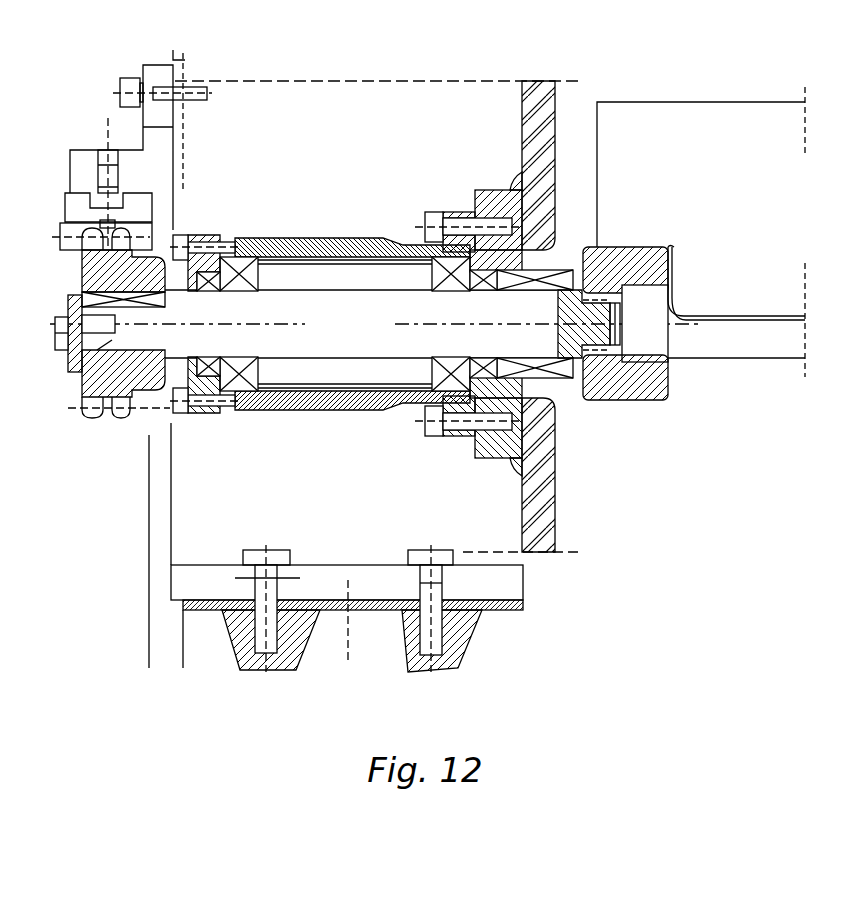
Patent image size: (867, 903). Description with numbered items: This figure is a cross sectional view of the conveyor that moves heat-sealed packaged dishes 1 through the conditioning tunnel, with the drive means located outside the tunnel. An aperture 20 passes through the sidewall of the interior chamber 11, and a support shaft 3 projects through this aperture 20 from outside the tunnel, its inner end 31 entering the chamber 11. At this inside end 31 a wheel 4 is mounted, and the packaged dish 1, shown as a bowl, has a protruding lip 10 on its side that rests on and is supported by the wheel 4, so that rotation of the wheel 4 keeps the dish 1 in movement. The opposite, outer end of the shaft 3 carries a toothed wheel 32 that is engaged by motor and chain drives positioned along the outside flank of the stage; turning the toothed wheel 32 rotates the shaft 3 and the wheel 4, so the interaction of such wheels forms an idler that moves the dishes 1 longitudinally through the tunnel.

The packaged dishes 1 is at (757, 315).
The support shaft 3 is at (338, 262).
The wheel 4 is at (648, 400).
The protruding lip 10 is at (638, 250).
The interior chamber 11 is at (695, 127).
The aperture 20 is at (522, 260).
The inside end of shaft 31 is at (585, 400).
The toothed wheel 32 is at (82, 356).